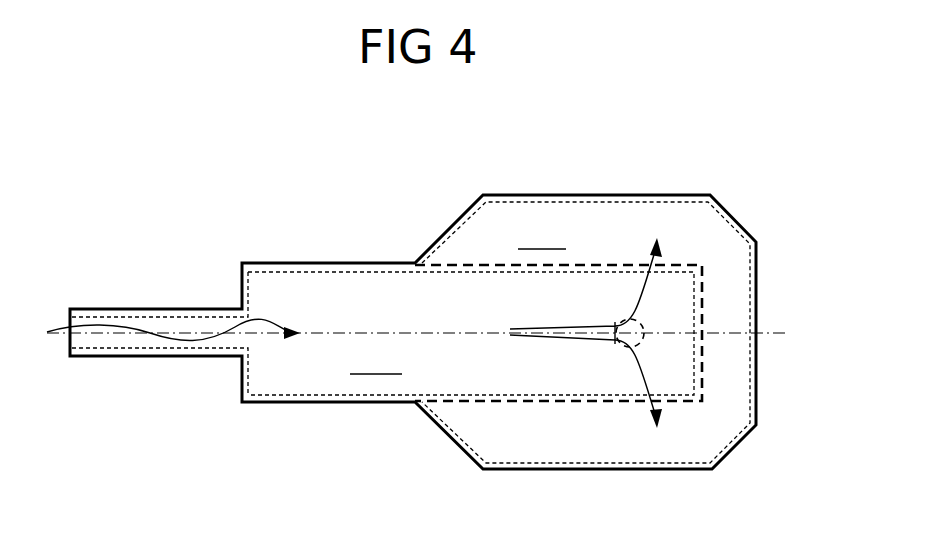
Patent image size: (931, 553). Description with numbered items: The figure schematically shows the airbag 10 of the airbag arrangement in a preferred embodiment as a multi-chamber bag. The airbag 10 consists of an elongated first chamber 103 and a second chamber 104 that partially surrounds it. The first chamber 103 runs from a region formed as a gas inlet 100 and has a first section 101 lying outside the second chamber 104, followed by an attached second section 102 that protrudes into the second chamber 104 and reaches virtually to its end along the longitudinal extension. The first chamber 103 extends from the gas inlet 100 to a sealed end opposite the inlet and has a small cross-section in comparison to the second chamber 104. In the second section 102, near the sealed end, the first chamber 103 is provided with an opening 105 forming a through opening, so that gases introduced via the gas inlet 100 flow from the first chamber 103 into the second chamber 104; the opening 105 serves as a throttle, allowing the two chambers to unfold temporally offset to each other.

The airbag 10 is at (352, 443).
The gas inlet 100 is at (107, 309).
The first section 101 is at (415, 260).
The second section 102 is at (694, 418).
The first chamber 103 is at (376, 362).
The second chamber 104 is at (586, 332).
The opening 105 is at (643, 325).